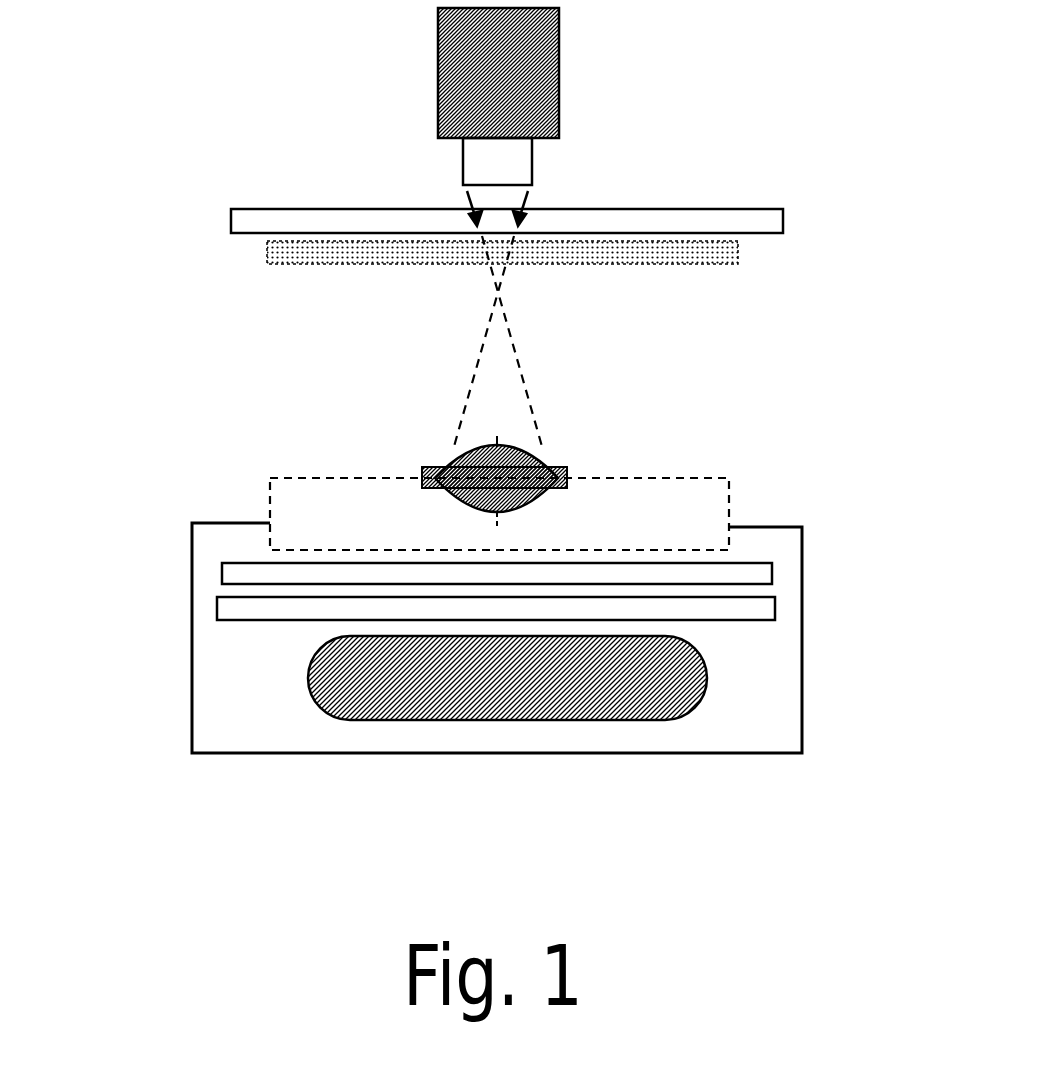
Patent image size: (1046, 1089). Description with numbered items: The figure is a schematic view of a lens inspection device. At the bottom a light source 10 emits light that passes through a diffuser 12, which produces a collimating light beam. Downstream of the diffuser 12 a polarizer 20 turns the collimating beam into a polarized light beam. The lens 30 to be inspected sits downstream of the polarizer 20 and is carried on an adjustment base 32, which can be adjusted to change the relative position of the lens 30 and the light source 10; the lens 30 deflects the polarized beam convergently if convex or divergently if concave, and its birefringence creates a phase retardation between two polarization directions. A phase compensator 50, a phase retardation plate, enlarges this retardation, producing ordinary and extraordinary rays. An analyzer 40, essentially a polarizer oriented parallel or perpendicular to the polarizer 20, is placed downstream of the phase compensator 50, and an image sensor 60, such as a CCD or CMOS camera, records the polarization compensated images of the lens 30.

The light source 10 is at (390, 675).
The diffuser 12 is at (748, 612).
The polarizer 20 is at (757, 565).
The lens 30 is at (463, 450).
The adjustment base 32 is at (593, 483).
The analyzer 40 is at (785, 220).
The phase compensator 50 is at (670, 265).
The image sensor 60 is at (557, 90).